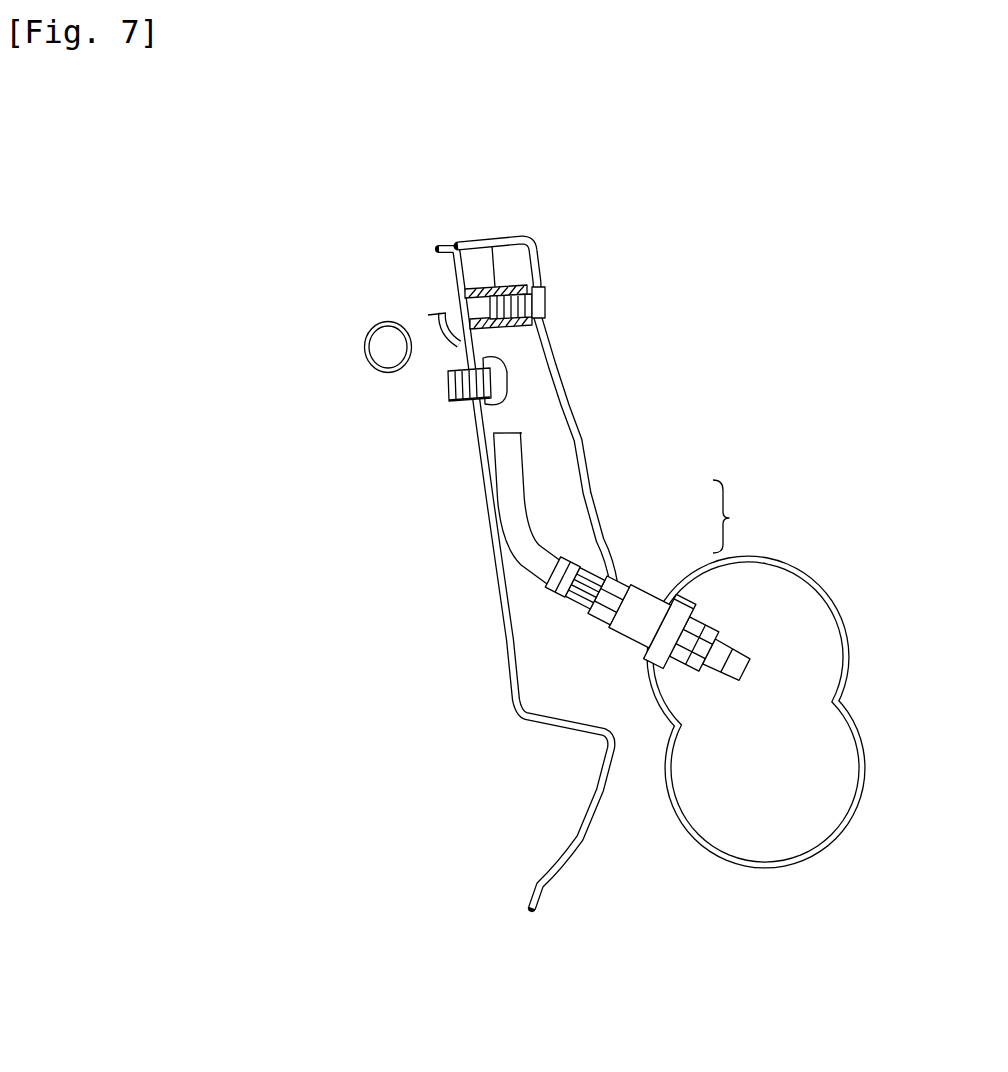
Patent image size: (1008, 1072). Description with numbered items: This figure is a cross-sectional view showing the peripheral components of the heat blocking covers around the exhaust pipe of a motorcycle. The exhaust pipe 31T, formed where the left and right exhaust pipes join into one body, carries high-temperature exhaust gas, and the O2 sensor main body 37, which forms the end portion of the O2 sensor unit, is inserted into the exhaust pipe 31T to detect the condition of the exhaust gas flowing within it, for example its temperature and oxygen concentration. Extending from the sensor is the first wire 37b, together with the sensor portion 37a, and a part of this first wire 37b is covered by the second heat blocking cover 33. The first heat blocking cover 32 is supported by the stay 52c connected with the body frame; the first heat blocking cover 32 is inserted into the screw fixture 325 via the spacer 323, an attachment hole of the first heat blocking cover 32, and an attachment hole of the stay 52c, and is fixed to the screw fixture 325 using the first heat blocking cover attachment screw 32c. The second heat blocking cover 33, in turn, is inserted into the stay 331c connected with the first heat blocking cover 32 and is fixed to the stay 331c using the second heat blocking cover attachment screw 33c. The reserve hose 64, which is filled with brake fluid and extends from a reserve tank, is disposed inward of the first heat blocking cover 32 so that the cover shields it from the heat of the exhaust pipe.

The exhaust pipe 31T is at (823, 603).
The first heat blocking cover 32 is at (491, 527).
The second heat blocking cover 33 is at (583, 438).
The stay 331c is at (487, 242).
The second heat blocking cover attachment screw 33c is at (543, 300).
The spacer 323 is at (474, 348).
The first heat blocking cover attachment screw 32c is at (450, 377).
The screw fixture 325 is at (458, 412).
The stay 52c is at (429, 323).
The reserve hose 64 is at (387, 375).
The O2 sensor main body 37 is at (737, 516).
The sensor body 37a is at (643, 585).
The first wire 37b is at (527, 497).